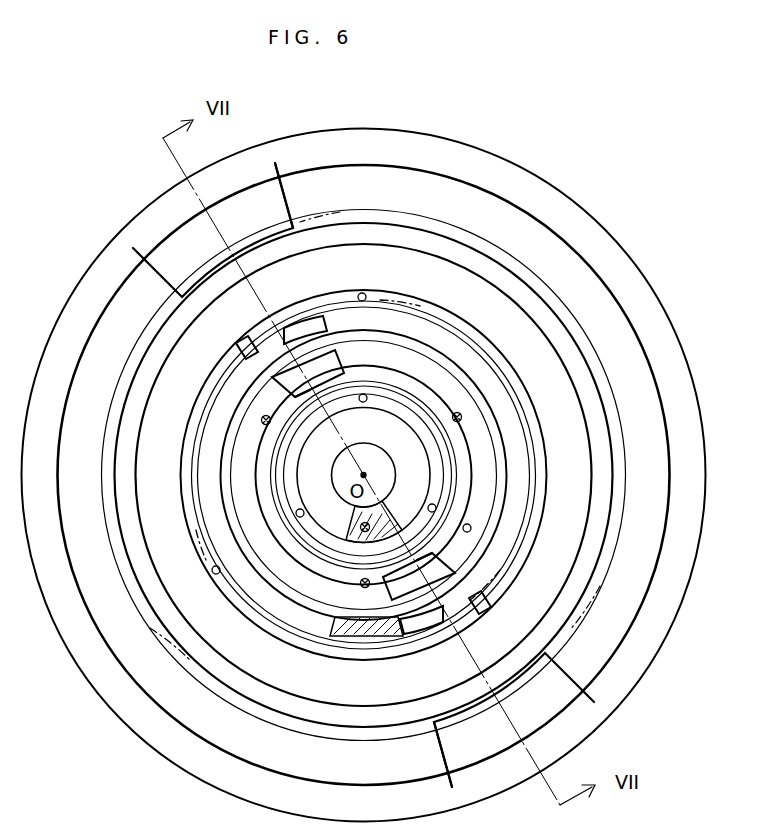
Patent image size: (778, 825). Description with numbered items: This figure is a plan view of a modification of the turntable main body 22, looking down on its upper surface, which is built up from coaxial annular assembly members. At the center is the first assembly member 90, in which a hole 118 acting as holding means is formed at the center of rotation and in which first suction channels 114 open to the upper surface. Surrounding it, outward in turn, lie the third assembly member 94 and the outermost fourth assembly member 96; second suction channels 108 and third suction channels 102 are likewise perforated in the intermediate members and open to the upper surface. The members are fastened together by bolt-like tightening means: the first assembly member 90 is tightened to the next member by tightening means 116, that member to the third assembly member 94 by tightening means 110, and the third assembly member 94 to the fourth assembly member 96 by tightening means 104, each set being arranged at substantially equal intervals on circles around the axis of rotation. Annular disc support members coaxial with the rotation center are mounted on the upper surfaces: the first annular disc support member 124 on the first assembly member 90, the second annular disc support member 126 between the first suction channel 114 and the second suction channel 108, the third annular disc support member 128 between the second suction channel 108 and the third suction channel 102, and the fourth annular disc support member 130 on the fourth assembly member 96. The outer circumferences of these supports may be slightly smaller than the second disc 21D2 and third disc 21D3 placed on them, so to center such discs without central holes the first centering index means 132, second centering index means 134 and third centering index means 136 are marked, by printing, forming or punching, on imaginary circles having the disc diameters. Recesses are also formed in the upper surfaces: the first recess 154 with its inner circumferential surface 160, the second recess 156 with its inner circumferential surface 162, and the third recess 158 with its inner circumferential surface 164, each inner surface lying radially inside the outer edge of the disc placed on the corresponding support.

The turntable main body 22 is at (572, 204).
The fourth assembly member 96 is at (617, 255).
The third assembly member 94 is at (575, 388).
The third disc 21D3 is at (412, 214).
The second disc 21D2 is at (322, 280).
The fourth annular disc support member 130 is at (246, 688).
The third centering index means 136 is at (366, 205).
The first centering index means 132 is at (267, 527).
The second suction channel 108 is at (247, 578).
The third annular disc support member 128 is at (280, 598).
The first annular disc support member 124 is at (470, 456).
The second annular disc support member 126 is at (276, 468).
The first assembly member 90 is at (376, 446).
The hole 118 is at (362, 475).
The inner circumferential surface of third recess 164 is at (200, 268).
The third recess 158 is at (284, 196).
The second recess 156 is at (272, 310).
The inner circumferential surface of second recess 162 is at (243, 343).
The first recess 154 is at (262, 372).
The inner circumferential surface of first recess 160 is at (290, 394).
The tightening means 104 is at (372, 638).
The tightening means 116 is at (382, 520).
The tightening means 110 is at (262, 420).
The third suction channel 102 is at (366, 294).
The first suction channel 114 is at (363, 402).
The second centering index means 134 is at (400, 305).